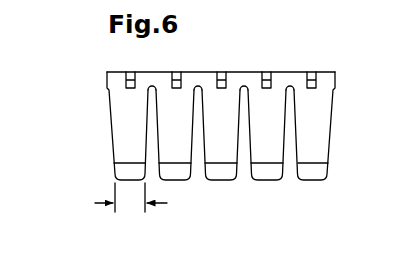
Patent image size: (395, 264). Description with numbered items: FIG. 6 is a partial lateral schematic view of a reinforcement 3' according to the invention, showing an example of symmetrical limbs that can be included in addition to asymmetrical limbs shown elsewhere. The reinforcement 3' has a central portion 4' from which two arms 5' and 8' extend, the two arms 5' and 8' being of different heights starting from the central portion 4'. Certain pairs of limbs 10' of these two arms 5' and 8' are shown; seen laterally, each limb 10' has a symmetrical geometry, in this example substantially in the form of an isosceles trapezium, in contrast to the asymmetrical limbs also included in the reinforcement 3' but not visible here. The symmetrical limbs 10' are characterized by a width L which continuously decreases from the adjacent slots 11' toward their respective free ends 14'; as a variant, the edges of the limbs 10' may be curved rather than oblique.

The reinforcement 3' is at (213, 130).
The central portion 4' is at (221, 54).
The arm 5' is at (326, 201).
The arm 8' is at (339, 126).
The limbs 10' is at (221, 107).
The slots 11' is at (220, 162).
The free ends 14' is at (273, 163).
The width L is at (131, 210).